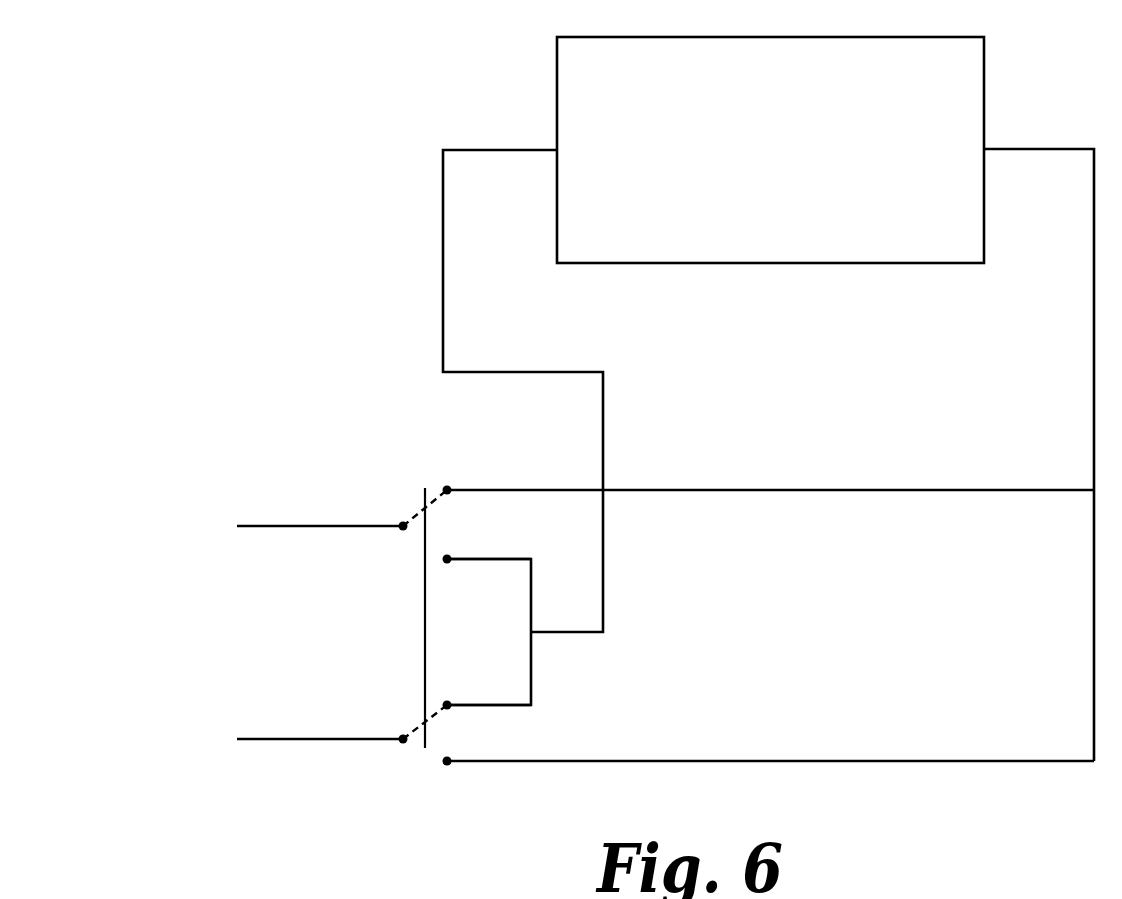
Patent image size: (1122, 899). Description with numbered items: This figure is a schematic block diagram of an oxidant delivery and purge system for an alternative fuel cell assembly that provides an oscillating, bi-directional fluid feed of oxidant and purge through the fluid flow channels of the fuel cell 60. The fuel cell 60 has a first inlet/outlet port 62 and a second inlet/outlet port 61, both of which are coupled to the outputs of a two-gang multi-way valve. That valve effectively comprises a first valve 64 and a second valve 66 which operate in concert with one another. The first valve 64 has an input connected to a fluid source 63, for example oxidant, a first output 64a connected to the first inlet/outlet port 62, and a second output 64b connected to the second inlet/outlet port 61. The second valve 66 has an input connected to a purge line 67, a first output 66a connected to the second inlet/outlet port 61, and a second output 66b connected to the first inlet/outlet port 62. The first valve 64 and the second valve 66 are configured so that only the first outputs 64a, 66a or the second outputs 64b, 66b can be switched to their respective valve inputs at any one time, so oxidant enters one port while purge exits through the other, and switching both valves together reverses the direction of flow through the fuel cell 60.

The fuel cell 60 is at (985, 68).
The second inlet/outlet port 61 is at (523, 150).
The first inlet/outlet port 62 is at (1000, 149).
The fluid source 63 is at (278, 525).
The first valve 64 is at (381, 557).
The first output of the first valve 64a is at (480, 490).
The second output of the first valve 64b is at (480, 559).
The second valve 66 is at (382, 708).
The first output of the second valve 66a is at (480, 705).
The second output of the second valve 66b is at (480, 761).
The purge line 67 is at (273, 739).